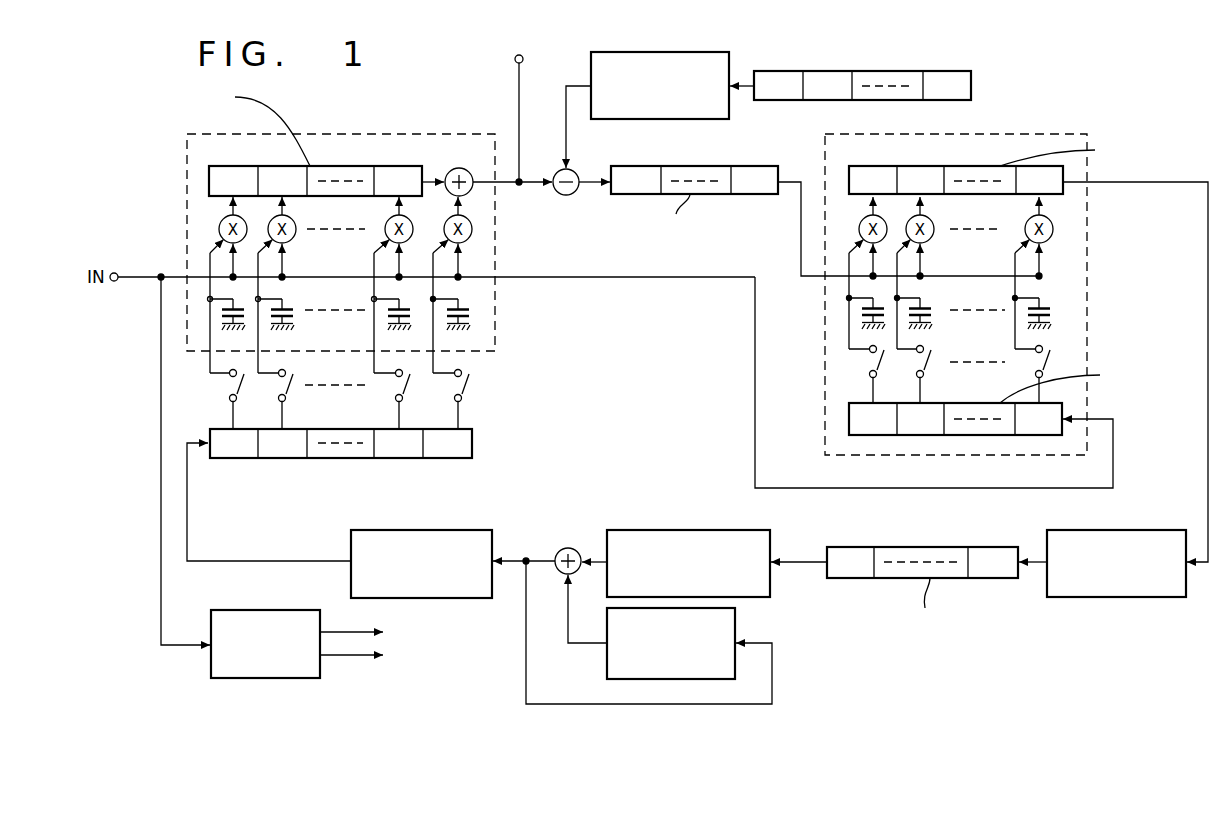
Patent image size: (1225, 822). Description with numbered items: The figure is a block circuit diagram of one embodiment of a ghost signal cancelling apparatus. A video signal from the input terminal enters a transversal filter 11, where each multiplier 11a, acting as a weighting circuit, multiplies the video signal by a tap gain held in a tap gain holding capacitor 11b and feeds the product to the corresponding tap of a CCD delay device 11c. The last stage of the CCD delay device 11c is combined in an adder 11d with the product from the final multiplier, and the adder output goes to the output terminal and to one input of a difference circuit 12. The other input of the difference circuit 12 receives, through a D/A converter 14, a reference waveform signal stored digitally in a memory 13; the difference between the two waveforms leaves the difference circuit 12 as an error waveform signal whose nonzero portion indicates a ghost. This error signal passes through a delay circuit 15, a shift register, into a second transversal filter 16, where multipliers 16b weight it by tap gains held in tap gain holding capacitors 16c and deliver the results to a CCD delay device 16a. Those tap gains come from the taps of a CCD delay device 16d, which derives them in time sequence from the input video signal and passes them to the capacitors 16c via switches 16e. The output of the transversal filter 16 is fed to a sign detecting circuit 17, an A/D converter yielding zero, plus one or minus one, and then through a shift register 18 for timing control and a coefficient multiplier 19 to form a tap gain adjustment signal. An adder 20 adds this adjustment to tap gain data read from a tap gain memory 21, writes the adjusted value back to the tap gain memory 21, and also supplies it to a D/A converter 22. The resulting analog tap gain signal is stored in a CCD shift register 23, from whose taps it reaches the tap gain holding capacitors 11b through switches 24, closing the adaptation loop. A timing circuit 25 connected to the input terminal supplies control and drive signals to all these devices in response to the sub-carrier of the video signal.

The transversal filter 11 is at (357, 133).
The multiplier 11a is at (298, 221).
The tap gain holding capacitor 11b is at (300, 312).
The CCD delay device 11c is at (321, 166).
The adder 11d is at (447, 173).
The difference circuit 12 is at (557, 172).
The memory 13 is at (873, 70).
The D/A converter 14 is at (661, 51).
The delay circuit 15 is at (694, 166).
The transversal filter 16 is at (1037, 133).
The CCD delay device 16a is at (972, 166).
The multiplier 16b is at (936, 230).
The tap gain holding capacitor 16c is at (935, 318).
The CCD delay device 16d is at (975, 403).
The switch 16e is at (936, 374).
The sign detecting circuit 17 is at (1104, 530).
The shift register 18 is at (913, 547).
The coefficient multiplier 19 is at (688, 530).
The adder 20 is at (568, 548).
The tap gain memory 21 is at (740, 627).
The D/A converter 22 is at (423, 531).
The shift register 23 is at (474, 443).
The switch 24 is at (461, 389).
The timing circuit 25 is at (266, 681).